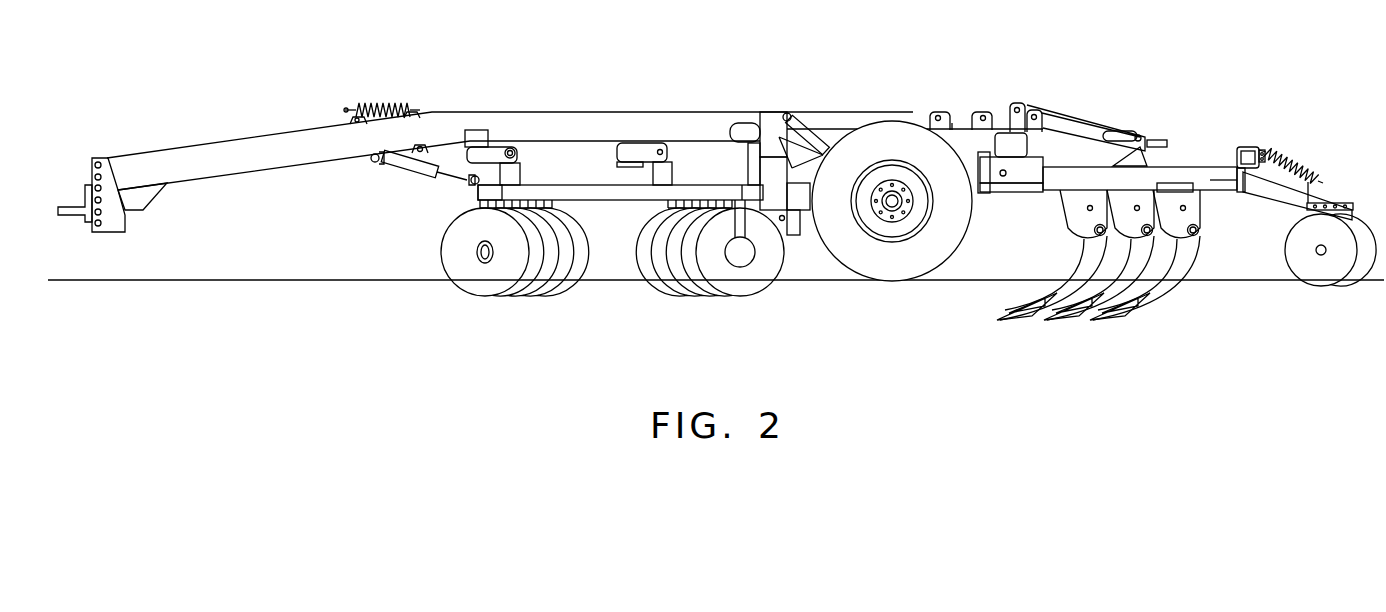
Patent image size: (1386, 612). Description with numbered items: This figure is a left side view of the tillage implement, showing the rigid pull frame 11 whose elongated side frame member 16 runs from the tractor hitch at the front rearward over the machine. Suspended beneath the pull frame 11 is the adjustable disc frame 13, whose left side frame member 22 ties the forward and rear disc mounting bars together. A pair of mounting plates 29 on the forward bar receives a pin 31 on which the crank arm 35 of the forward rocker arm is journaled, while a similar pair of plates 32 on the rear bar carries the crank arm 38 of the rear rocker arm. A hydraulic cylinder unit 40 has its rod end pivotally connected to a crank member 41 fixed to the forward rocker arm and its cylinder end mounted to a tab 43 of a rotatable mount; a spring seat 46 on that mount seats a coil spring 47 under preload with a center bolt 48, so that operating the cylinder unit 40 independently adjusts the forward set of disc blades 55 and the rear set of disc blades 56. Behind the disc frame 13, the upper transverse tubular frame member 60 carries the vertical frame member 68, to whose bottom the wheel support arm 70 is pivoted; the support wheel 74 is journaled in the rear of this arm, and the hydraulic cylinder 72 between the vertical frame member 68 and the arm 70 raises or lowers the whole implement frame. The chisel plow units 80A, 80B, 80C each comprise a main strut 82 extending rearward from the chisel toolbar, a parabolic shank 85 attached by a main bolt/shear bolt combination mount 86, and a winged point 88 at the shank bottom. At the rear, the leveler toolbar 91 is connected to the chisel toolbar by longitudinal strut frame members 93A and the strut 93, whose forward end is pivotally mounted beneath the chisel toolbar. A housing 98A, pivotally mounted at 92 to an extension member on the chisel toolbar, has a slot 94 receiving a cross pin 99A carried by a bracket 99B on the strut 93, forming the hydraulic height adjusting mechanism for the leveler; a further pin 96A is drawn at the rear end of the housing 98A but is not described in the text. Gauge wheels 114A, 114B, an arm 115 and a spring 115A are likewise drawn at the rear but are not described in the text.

The pull frame 11 is at (205, 130).
The disc frame 13 is at (487, 192).
The side frame member 16 is at (258, 155).
The left side frame member 22 is at (643, 192).
The mounting plates 29 is at (512, 173).
The pin 31 is at (508, 150).
The mounting plates 32 is at (665, 173).
The crank arm 35 is at (480, 153).
The crank arm 38 is at (647, 152).
The hydraulic cylinder unit 40 is at (398, 170).
The crank member 41 is at (482, 175).
The tab 43 is at (368, 158).
The spring seat 46 is at (357, 108).
The coil spring 47 is at (387, 102).
The center bolt 48 is at (352, 110).
The forward set of disc blades 55 is at (518, 308).
The rear set of disc blades 56 is at (708, 305).
The upper transverse tubular frame member 60 is at (765, 138).
The vertical frame member 68 is at (775, 190).
The wheel support arm 70 is at (800, 207).
The hydraulic cylinder 72 is at (800, 127).
The support wheel 74 is at (932, 242).
The chisel plow unit 80A is at (1117, 323).
The chisel plow unit 80B is at (1067, 323).
The chisel plow unit 80C is at (1003, 327).
The main strut 82 is at (1083, 178).
The parabolic shank 85 is at (1190, 267).
The main bolt/shear bolt combination mount 86 is at (1178, 190).
The winged point 88 is at (1072, 380).
The leveler toolbar 91 is at (1248, 148).
The housing pivot 92 is at (1013, 115).
The longitudinal strut 93 is at (1012, 110).
The longitudinal strut frame member 93A is at (1197, 168).
The slot 94 is at (1120, 130).
The adjustment pin 96A is at (1138, 134).
The housing 98A is at (1090, 128).
The cross pin 99A is at (1048, 143).
The bracket 99B is at (1137, 158).
The first gauge wheel 114A is at (1311, 290).
The second gauge wheel 114B is at (1355, 290).
The gauge wheel arm 115 is at (1291, 197).
The gauge wheel spring 115A is at (1290, 167).